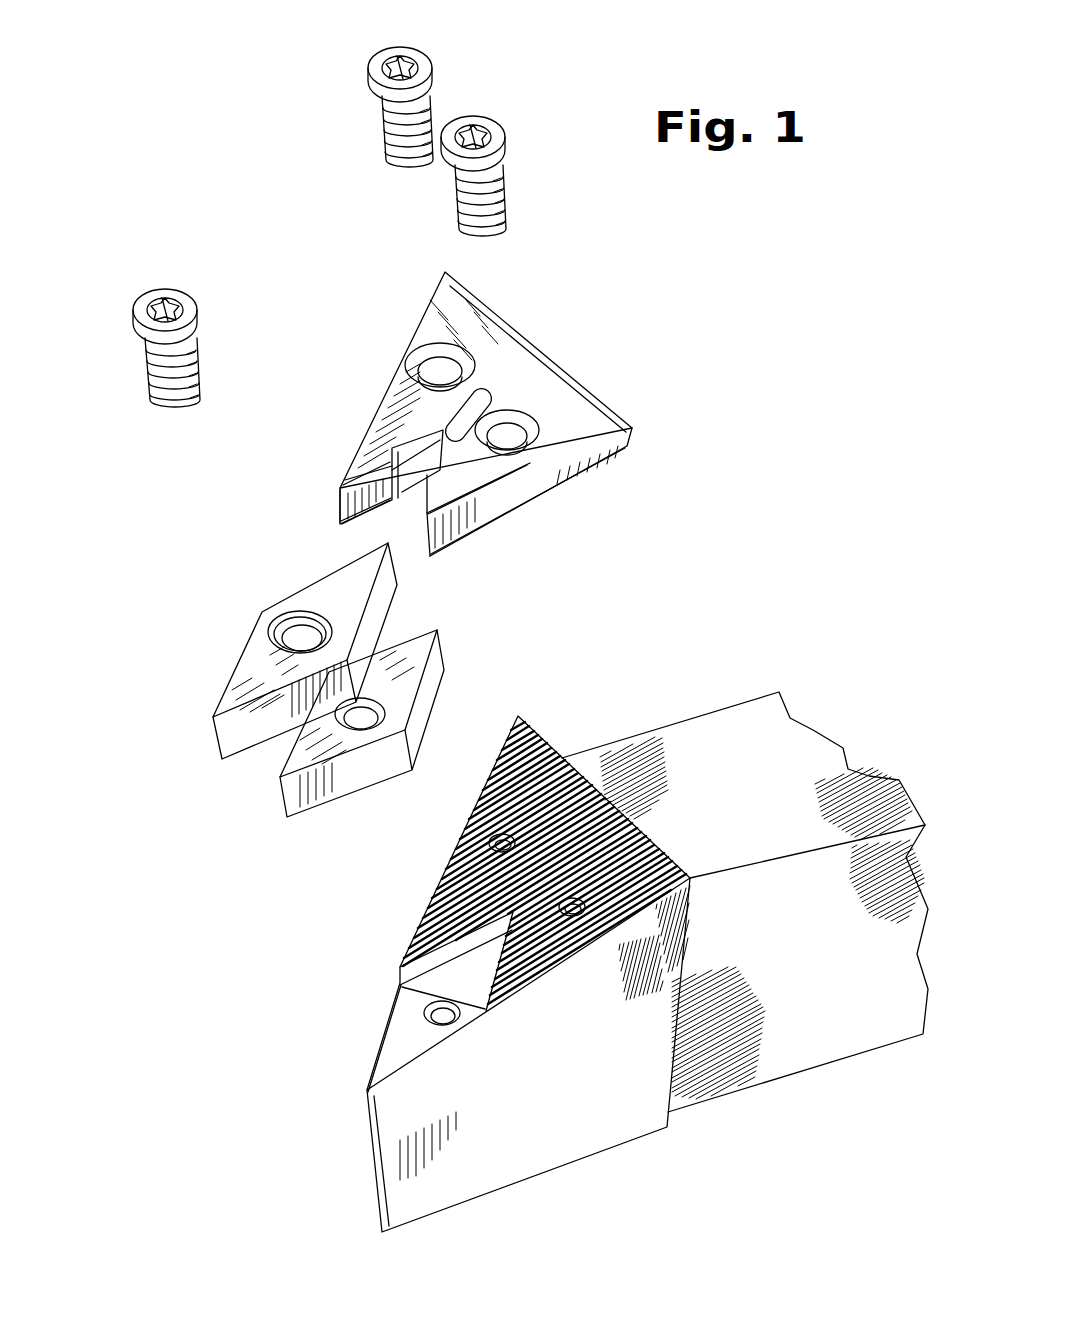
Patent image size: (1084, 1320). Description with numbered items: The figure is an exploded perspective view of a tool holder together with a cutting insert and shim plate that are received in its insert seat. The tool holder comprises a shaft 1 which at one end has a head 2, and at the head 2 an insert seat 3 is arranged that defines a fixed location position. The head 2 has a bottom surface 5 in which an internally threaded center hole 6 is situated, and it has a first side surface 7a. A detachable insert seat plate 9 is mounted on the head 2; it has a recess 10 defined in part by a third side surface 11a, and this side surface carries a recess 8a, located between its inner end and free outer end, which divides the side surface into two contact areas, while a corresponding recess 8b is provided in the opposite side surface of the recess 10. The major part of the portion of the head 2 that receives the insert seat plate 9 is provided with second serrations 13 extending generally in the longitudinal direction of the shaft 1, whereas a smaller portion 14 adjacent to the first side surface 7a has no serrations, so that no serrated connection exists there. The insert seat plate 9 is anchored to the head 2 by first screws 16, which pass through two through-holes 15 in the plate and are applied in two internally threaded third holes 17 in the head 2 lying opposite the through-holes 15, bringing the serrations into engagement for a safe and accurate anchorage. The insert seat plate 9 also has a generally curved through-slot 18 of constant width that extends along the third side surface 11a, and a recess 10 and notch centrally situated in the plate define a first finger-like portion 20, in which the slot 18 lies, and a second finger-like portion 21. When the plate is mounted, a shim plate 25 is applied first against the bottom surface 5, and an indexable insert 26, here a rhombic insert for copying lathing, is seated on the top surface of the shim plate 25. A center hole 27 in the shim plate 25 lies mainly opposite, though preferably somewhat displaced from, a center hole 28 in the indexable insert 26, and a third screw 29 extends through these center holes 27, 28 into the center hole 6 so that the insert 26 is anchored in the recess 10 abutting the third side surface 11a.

The shaft 1 is at (590, 928).
The head 2 is at (540, 1193).
The insert seat 3 is at (472, 933).
The bottom surface 5 is at (395, 1060).
The center hole 6 is at (425, 1016).
The first side surface 7a is at (413, 983).
The recess 8a is at (363, 463).
The recess 8b is at (472, 488).
The insert seat plate 9 is at (425, 400).
The recess 10 is at (390, 523).
The third side surface 11a is at (343, 520).
The second serrations 13 is at (545, 737).
The smaller portion 14 is at (470, 897).
The through-holes 15 is at (512, 423).
The first screws 16 is at (372, 68).
The third holes 17 is at (497, 835).
The slot 18 is at (400, 380).
The first finger-like portion 20 is at (360, 435).
The second finger-like portion 21 is at (462, 527).
The shim plate 25 is at (329, 705).
The indexable insert 26 is at (247, 651).
The center hole 27 is at (365, 710).
The center hole 28 is at (288, 638).
The third screw 29 is at (140, 300).